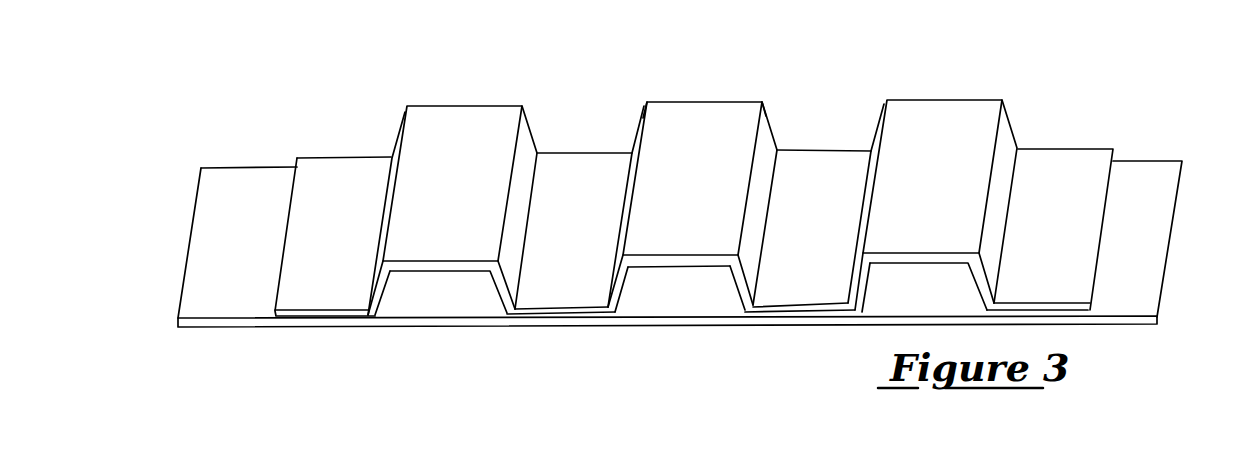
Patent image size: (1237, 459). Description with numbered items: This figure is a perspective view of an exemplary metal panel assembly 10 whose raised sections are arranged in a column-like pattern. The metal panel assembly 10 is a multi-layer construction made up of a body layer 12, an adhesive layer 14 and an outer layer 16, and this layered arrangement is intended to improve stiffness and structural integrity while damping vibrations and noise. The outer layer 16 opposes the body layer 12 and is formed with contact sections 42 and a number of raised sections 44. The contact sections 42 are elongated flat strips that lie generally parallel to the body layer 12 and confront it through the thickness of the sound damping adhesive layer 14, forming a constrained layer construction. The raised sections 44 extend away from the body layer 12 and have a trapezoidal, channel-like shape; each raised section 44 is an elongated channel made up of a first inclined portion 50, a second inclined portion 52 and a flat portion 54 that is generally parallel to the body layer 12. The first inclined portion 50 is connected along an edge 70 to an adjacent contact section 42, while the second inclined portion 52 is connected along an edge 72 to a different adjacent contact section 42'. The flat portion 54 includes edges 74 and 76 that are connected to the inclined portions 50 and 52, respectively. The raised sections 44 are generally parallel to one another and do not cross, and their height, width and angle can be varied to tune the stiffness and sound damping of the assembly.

The metal panel assembly 10 is at (906, 73).
The body layer 12 is at (433, 312).
The adhesive layer 14 is at (317, 325).
The outer layer 16 is at (463, 120).
The contact section 42 is at (569, 208).
The contact section 42' is at (808, 210).
The raised section 44 is at (696, 206).
The first inclined portion 50 is at (615, 253).
The second inclined portion 52 is at (755, 257).
The flat portion 54 is at (683, 235).
The edge 70 is at (628, 170).
The edge 72 is at (777, 170).
The edge 74 is at (643, 120).
The edge 76 is at (762, 122).